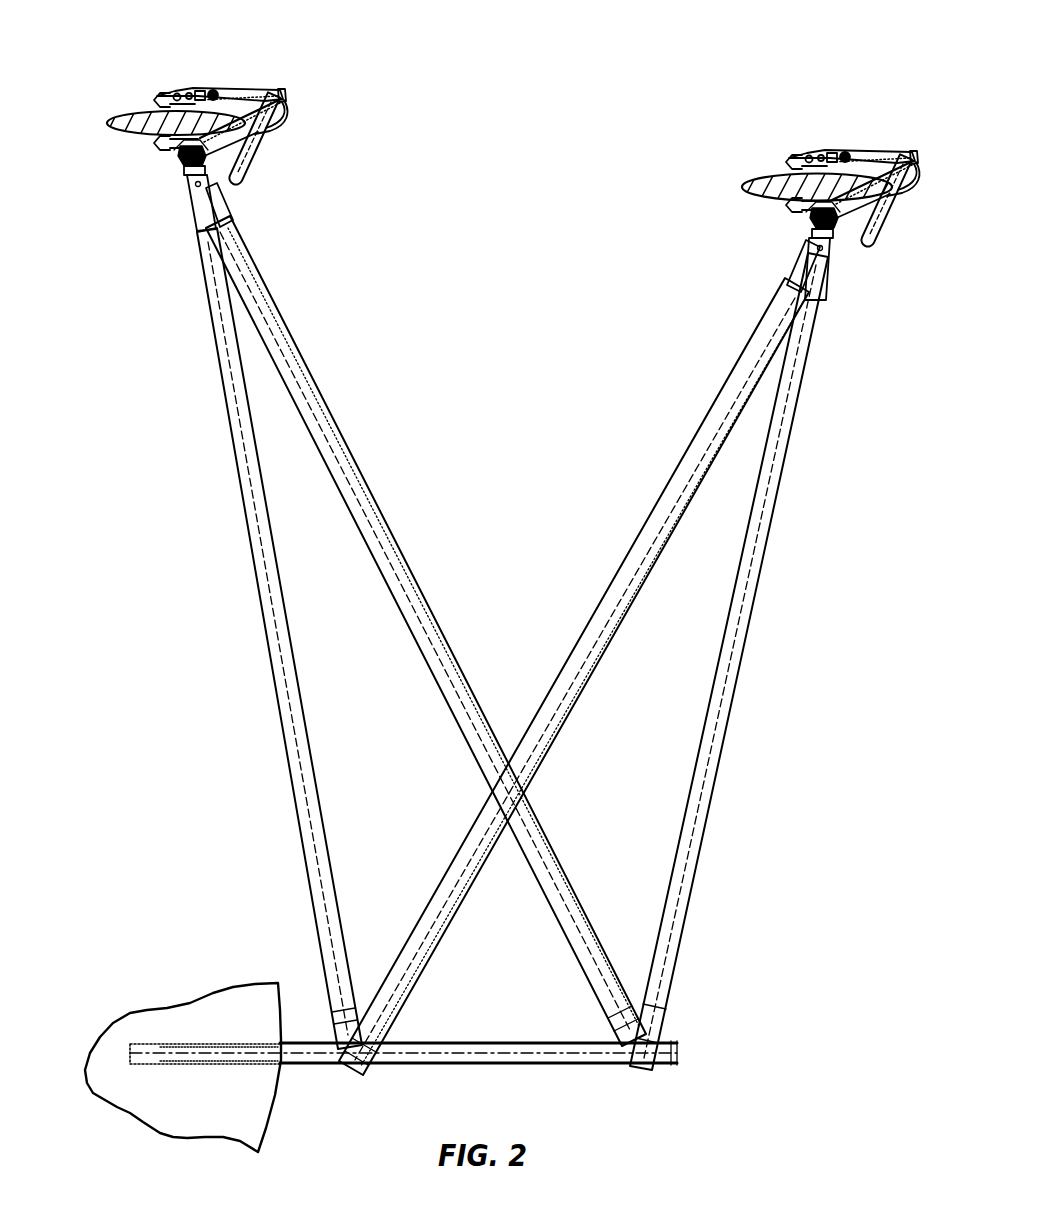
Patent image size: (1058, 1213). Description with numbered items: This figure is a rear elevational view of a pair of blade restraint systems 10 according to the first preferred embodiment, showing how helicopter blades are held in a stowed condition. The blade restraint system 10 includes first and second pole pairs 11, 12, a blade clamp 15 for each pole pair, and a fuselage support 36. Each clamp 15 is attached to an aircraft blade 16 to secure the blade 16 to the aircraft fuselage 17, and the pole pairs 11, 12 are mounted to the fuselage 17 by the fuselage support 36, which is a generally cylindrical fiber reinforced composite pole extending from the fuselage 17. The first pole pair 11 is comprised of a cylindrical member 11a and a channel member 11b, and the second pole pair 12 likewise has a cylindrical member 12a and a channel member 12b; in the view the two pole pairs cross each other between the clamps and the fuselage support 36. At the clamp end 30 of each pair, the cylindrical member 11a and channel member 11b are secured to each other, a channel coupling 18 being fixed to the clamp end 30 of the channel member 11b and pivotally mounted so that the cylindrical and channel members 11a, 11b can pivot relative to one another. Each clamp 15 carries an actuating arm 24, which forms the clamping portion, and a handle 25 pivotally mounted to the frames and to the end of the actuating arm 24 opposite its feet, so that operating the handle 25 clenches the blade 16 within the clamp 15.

The blade restraint system 10 is at (146, 52).
The first pole pair 11 is at (240, 554).
The cylindrical member 11a is at (226, 410).
The channel member 11b is at (362, 478).
The second pole pair 12 is at (754, 648).
The cylindrical member 12a is at (776, 500).
The channel member 12b is at (618, 572).
The blade clamp 15 is at (237, 63).
The aircraft blade 16 is at (110, 121).
The aircraft fuselage 17 is at (280, 1097).
The channel coupling 18 is at (226, 200).
The actuating arm 24 is at (258, 90).
The handle 25 is at (250, 160).
The clamp end 30 is at (178, 191).
The fuselage support 36 is at (514, 1072).